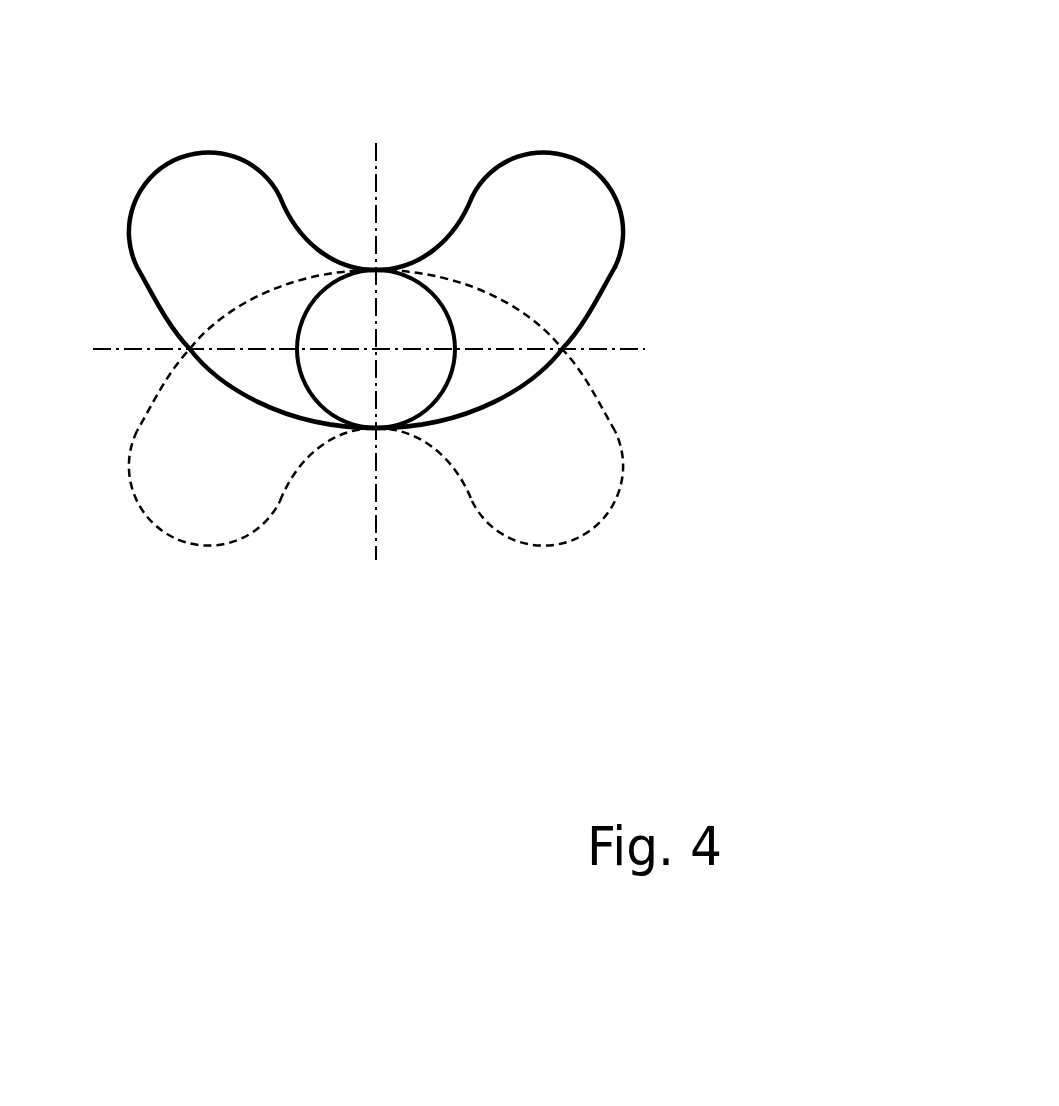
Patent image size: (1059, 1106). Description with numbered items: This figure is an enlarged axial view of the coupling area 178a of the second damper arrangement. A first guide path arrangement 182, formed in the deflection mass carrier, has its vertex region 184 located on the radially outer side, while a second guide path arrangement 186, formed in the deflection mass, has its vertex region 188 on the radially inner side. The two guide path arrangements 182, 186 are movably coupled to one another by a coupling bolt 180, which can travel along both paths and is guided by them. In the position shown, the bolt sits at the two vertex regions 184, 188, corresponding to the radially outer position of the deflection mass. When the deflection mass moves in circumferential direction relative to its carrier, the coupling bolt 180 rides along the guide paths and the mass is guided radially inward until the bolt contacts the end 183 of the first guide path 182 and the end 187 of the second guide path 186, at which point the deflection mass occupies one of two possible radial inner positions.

The coupling area 178a is at (153, 577).
The coupling bolt 180 is at (347, 330).
The first guide path arrangement 182 is at (572, 500).
The end of guide path 183 is at (637, 492).
The vertex region 184 is at (376, 270).
The second guide path arrangement 186 is at (585, 187).
The end of guide path 187 is at (168, 145).
The vertex region 188 is at (374, 430).